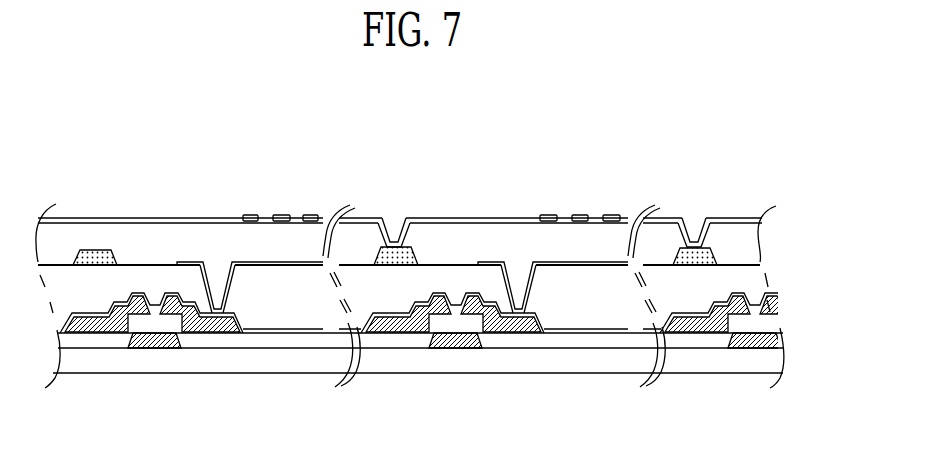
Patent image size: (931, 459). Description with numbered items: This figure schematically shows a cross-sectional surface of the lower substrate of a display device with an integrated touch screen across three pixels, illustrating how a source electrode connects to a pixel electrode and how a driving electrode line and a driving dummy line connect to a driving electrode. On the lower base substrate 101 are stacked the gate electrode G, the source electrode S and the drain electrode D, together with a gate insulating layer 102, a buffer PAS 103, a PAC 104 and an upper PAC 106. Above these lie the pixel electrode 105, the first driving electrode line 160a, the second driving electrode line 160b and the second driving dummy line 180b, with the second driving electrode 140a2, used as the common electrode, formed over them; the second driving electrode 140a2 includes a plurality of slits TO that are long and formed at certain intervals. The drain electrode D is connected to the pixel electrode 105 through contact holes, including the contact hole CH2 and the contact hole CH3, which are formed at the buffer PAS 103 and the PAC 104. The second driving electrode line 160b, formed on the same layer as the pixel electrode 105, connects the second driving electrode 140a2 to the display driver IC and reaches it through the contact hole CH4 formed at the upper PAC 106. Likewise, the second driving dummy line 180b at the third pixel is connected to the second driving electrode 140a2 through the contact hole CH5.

The lower base substrate 101 is at (738, 360).
The gate insulating layer 102 is at (695, 342).
The buffer PAS 103 is at (558, 333).
The PAC 104 is at (298, 302).
The pixel electrode 105 is at (587, 330).
The PAC 106 is at (267, 247).
The source electrode S is at (390, 332).
The gate electrode G is at (443, 342).
The drain electrode D is at (507, 332).
The contact hole CH2 is at (514, 263).
The contact hole CH3 is at (213, 263).
The contact hole CH4 is at (395, 218).
The contact hole CH5 is at (695, 218).
The first driving electrode line 160a is at (117, 258).
The second driving electrode line 160b is at (418, 257).
The second driving dummy line 180b is at (717, 256).
The second driving electrode 140a2 is at (310, 215).
The slit TO is at (603, 215).